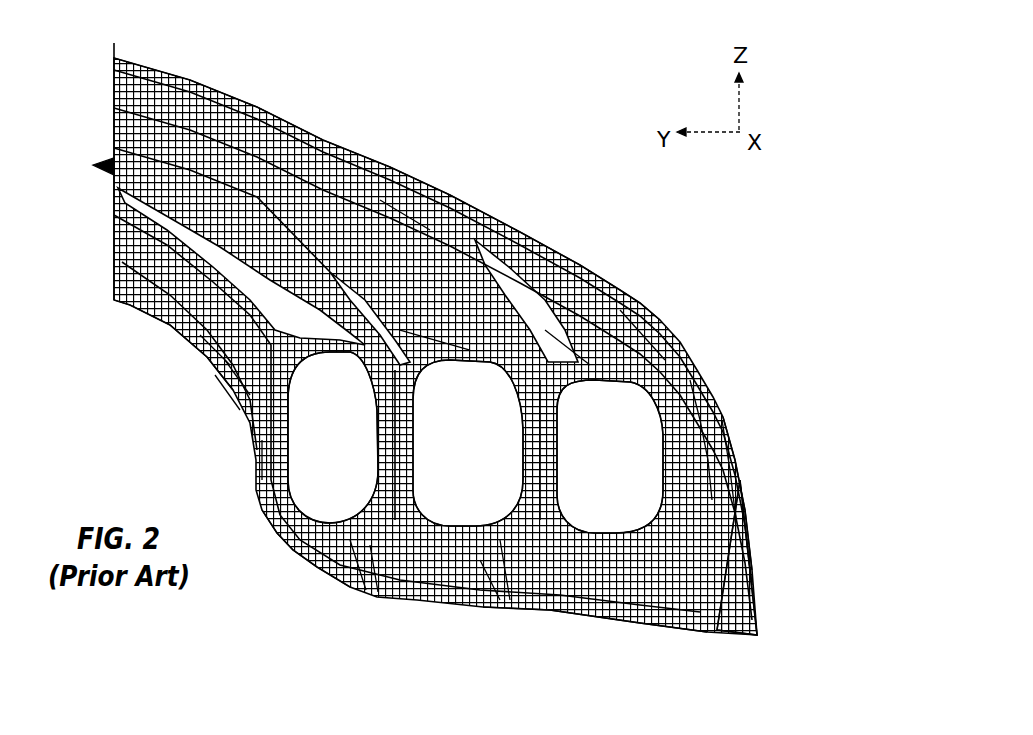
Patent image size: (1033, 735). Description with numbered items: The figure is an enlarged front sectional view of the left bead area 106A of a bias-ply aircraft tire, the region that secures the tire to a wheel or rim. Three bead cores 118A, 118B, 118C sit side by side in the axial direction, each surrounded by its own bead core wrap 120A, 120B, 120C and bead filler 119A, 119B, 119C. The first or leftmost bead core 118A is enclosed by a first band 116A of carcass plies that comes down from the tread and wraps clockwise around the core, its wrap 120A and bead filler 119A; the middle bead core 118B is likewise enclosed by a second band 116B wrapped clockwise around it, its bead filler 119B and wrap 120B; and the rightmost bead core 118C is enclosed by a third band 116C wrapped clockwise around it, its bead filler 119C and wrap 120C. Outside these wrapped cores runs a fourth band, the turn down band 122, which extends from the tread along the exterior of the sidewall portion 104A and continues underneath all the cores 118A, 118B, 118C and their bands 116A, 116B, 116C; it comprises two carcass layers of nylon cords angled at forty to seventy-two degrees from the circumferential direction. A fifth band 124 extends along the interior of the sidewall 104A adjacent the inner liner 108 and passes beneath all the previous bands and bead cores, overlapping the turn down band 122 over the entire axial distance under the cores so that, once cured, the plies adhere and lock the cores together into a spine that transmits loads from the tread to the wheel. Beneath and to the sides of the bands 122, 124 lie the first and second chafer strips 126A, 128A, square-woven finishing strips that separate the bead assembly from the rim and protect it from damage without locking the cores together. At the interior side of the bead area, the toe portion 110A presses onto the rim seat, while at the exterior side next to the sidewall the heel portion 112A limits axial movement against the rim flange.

The sidewall portion 104A is at (127, 303).
The bead area 106A is at (233, 405).
The inner liner 108 is at (540, 243).
The toe portion 110A is at (727, 633).
The heel portion 112A is at (300, 560).
The first band of carcass plies 116A is at (366, 585).
The second band of carcass plies 116B is at (500, 600).
The third band of carcass plies 116C is at (695, 482).
The first bead core 118A is at (369, 455).
The second bead core 118B is at (499, 459).
The third bead core 118C is at (645, 477).
The bead filler 119A is at (215, 347).
The bead filler 119B is at (408, 215).
The bead filler 119C is at (567, 340).
The bead core wrap 120A is at (233, 378).
The bead core wrap 120B is at (440, 340).
The bead core wrap 120C is at (645, 303).
The turn down band 122 is at (272, 462).
The fifth band 124 is at (568, 612).
The first chafer strip 126A is at (723, 540).
The second chafer strip 128A is at (640, 617).